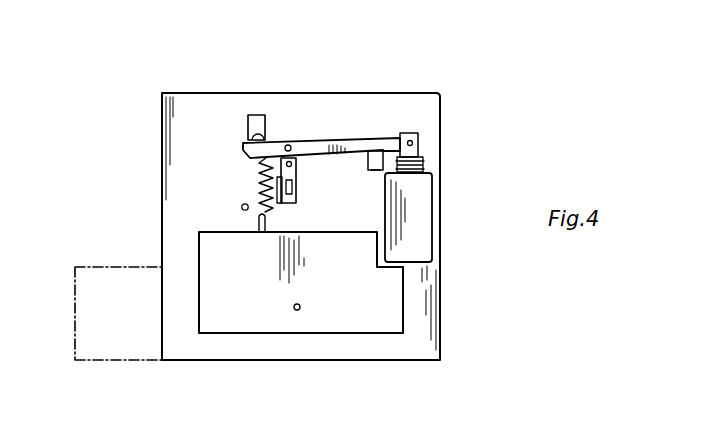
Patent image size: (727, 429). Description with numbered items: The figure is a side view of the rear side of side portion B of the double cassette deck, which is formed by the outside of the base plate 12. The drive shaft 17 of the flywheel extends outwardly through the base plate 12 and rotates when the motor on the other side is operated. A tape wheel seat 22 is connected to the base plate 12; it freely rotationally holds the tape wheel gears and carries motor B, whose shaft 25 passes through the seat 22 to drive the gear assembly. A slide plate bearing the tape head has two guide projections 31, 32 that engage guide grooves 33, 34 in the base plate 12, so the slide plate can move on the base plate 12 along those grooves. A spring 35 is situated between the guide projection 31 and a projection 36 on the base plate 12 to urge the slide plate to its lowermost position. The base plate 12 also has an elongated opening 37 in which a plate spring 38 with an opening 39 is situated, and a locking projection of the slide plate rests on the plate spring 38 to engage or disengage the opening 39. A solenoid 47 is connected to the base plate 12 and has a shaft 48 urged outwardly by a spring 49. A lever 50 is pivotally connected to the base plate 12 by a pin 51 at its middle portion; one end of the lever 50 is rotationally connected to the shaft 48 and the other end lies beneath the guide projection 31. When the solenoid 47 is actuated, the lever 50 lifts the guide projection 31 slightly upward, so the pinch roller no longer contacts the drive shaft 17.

The base plate 12 is at (437, 356).
The drive shaft 17 is at (241, 208).
The tape wheel seat 22 is at (233, 315).
The shaft 25 is at (299, 310).
The guide projection 31 is at (250, 140).
The guide projection 32 is at (373, 172).
The guide groove 33 is at (257, 115).
The guide groove 34 is at (373, 158).
The spring 35 is at (258, 193).
The projection 36 is at (266, 228).
The elongated opening 37 is at (296, 196).
The plate spring 38 is at (295, 172).
The opening 39 is at (296, 186).
The solenoid 47 is at (418, 222).
The shaft 48 is at (415, 148).
The spring 49 is at (428, 153).
The lever 50 is at (355, 145).
The pin 51 is at (292, 143).